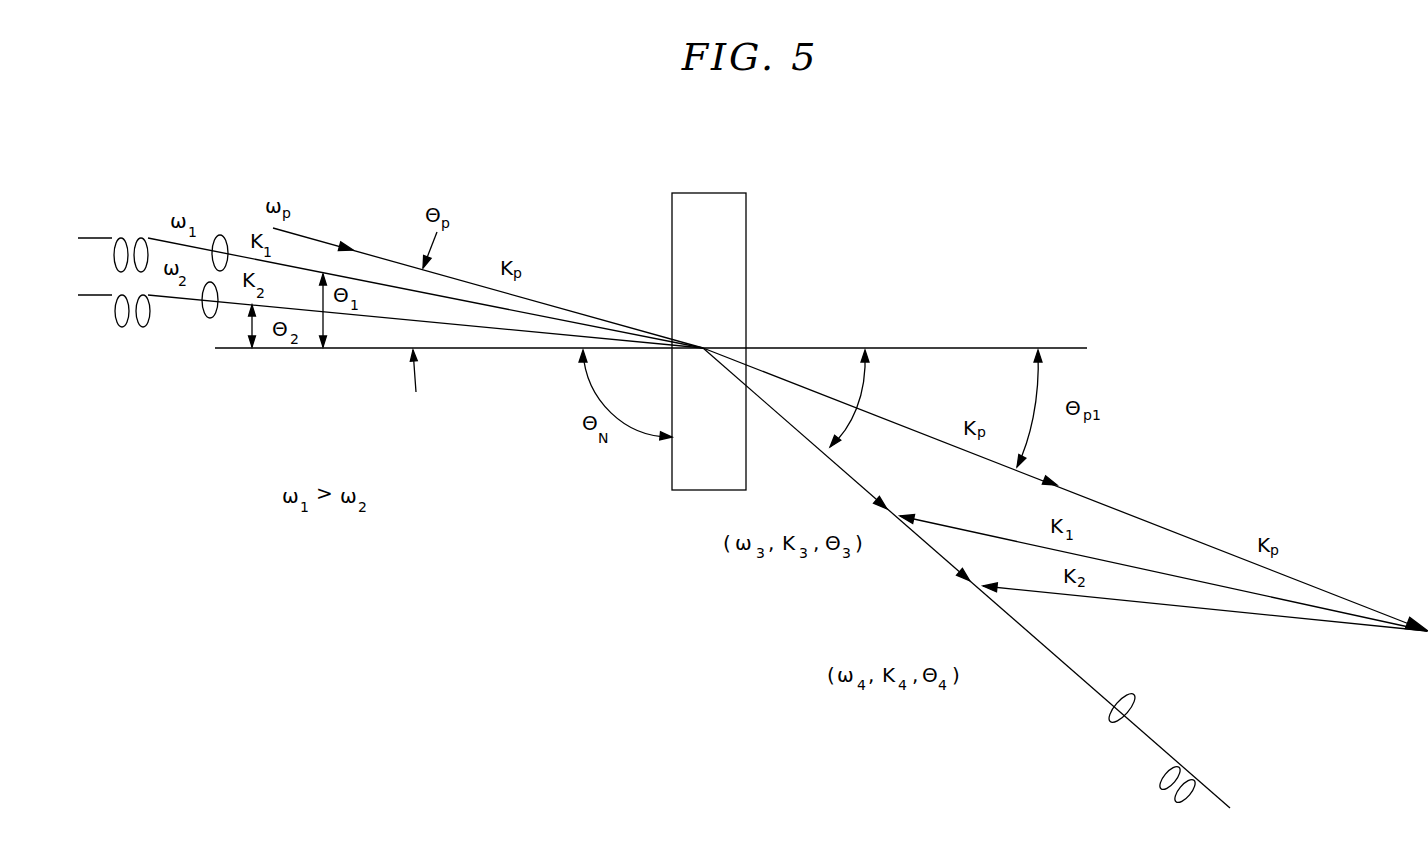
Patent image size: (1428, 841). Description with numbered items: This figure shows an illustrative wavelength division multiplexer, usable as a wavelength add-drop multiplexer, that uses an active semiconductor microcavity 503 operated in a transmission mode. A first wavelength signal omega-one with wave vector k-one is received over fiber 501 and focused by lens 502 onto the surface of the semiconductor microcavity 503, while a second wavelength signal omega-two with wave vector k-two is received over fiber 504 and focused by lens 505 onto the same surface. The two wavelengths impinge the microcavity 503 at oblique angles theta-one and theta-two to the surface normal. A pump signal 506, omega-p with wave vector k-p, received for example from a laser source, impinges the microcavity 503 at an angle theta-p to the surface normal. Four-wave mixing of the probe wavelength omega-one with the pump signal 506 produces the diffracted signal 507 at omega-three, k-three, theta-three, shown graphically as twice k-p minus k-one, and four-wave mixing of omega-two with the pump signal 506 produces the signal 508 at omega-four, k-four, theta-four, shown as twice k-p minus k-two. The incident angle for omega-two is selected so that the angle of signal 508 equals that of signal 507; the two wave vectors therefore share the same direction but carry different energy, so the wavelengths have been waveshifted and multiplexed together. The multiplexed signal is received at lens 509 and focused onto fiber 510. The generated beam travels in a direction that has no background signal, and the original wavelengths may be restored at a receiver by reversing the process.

The fiber 501 is at (97, 238).
The lens 502 is at (223, 235).
The semiconductor microcavity 503 is at (710, 193).
The fiber 504 is at (92, 297).
The lens 505 is at (201, 318).
The pump signal 506 is at (308, 228).
The FWM signal 507 is at (845, 470).
The FWM signal 508 is at (895, 622).
The lens 509 is at (1135, 693).
The fiber 510 is at (1195, 768).